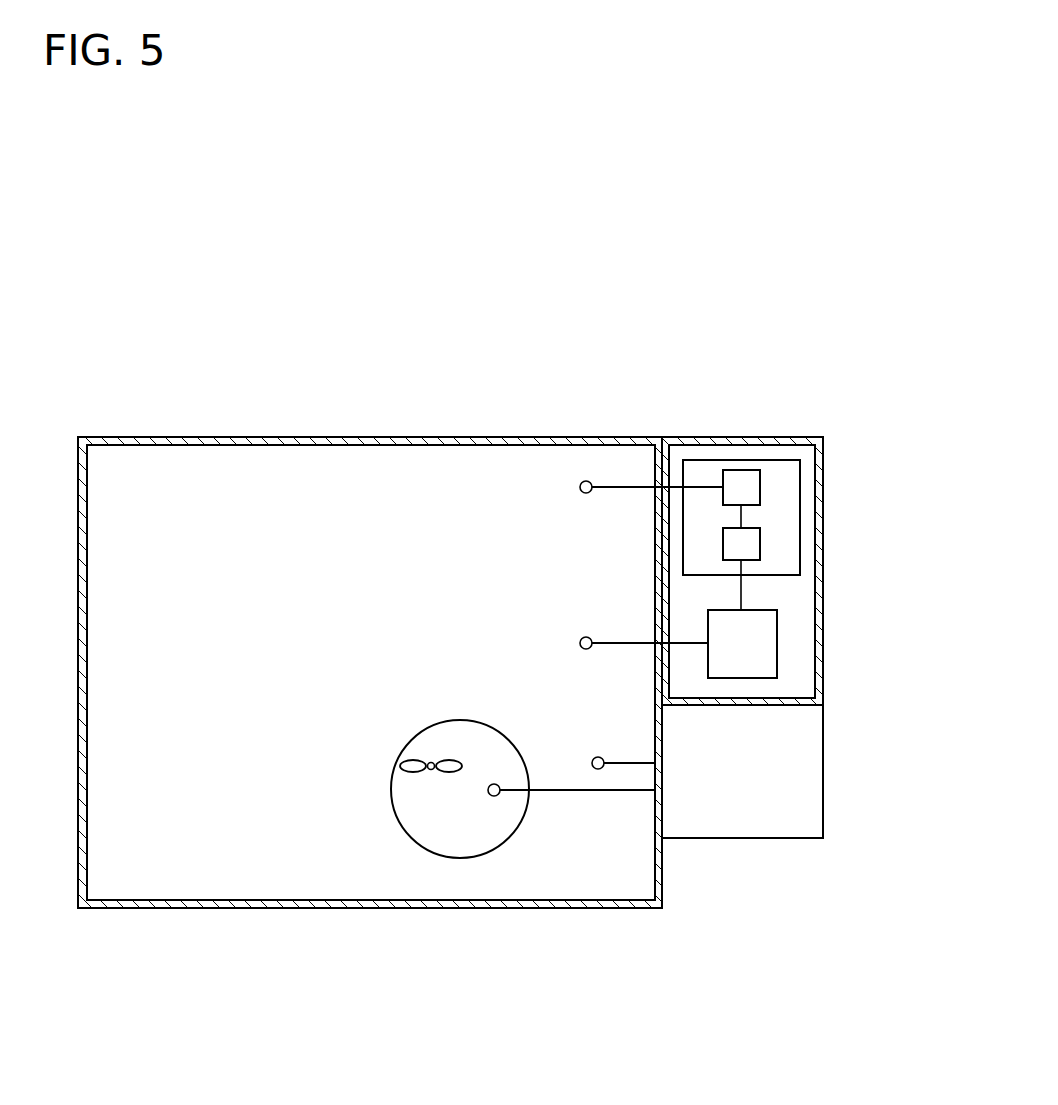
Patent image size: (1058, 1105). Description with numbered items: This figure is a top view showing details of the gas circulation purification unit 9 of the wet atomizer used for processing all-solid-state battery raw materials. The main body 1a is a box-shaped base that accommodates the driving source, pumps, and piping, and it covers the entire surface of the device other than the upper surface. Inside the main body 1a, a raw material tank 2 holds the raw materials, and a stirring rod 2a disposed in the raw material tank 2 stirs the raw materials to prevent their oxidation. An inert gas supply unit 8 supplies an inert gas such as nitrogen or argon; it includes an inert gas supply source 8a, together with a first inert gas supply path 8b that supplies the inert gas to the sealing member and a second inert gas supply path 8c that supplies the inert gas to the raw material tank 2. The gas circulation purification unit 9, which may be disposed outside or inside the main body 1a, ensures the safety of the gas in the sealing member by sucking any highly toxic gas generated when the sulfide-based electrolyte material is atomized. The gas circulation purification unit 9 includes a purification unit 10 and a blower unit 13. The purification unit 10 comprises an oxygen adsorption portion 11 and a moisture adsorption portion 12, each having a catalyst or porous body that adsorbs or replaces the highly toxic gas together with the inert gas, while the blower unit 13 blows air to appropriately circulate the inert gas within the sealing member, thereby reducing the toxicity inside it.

The main body 1a is at (235, 868).
The raw material tank 2 is at (463, 826).
The stirring rod 2a is at (415, 757).
The inert gas supply unit 8 is at (661, 874).
The inert gas supply source 8a is at (718, 800).
The first inert gas supply path 8b is at (622, 763).
The second inert gas supply path 8c is at (577, 886).
The gas circulation purification unit 9 is at (793, 605).
The purification unit 10 is at (908, 460).
The oxygen adsorption portion 11 is at (762, 548).
The moisture adsorption portion 12 is at (762, 490).
The blower unit 13 is at (778, 652).